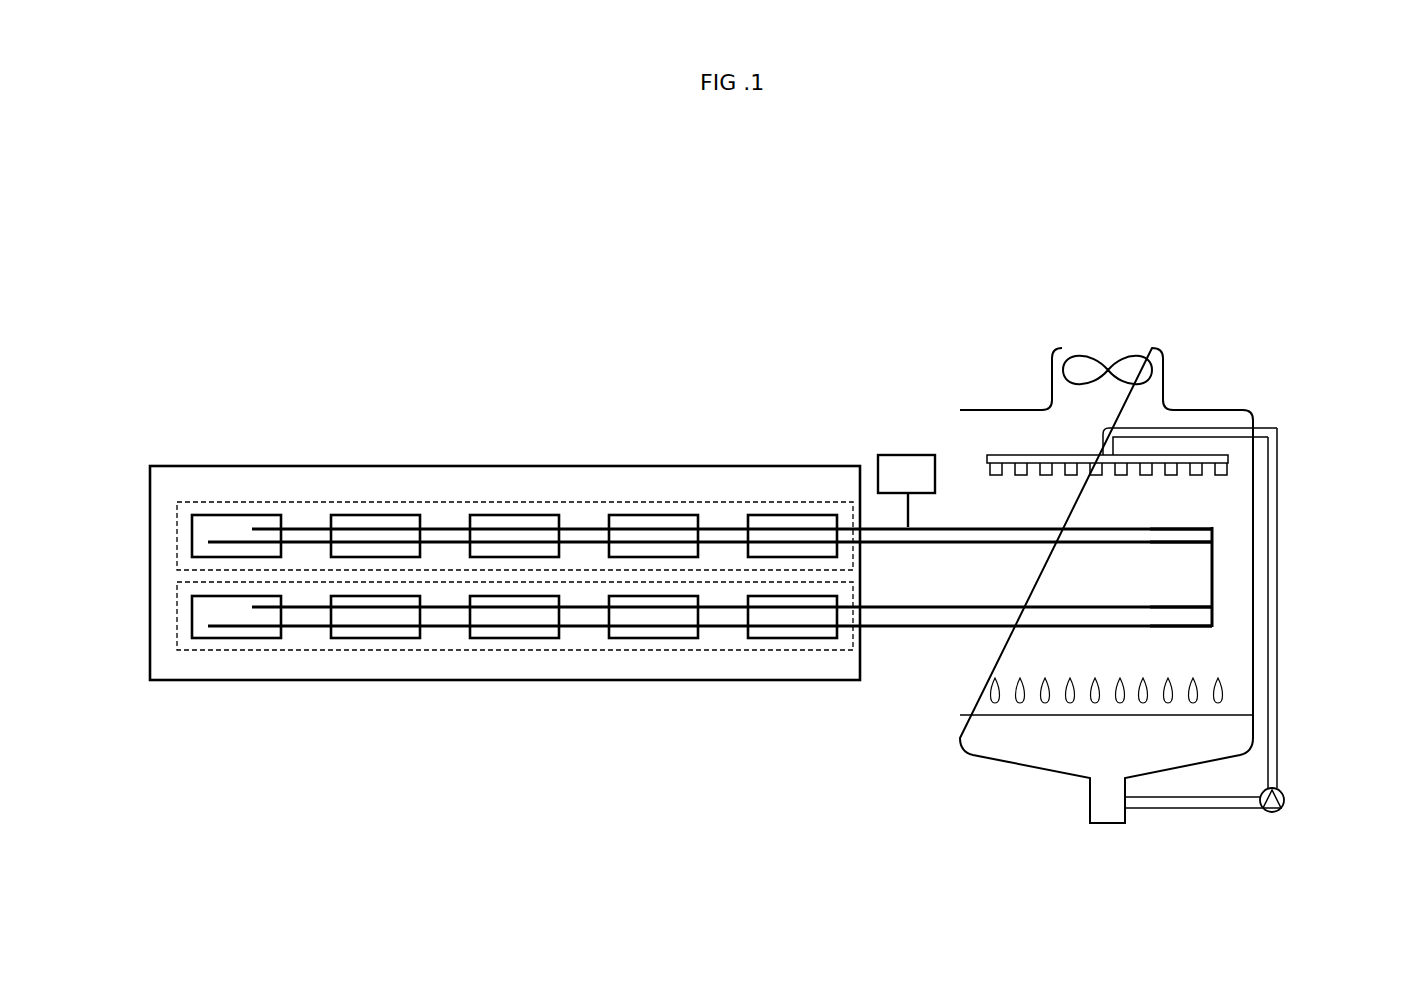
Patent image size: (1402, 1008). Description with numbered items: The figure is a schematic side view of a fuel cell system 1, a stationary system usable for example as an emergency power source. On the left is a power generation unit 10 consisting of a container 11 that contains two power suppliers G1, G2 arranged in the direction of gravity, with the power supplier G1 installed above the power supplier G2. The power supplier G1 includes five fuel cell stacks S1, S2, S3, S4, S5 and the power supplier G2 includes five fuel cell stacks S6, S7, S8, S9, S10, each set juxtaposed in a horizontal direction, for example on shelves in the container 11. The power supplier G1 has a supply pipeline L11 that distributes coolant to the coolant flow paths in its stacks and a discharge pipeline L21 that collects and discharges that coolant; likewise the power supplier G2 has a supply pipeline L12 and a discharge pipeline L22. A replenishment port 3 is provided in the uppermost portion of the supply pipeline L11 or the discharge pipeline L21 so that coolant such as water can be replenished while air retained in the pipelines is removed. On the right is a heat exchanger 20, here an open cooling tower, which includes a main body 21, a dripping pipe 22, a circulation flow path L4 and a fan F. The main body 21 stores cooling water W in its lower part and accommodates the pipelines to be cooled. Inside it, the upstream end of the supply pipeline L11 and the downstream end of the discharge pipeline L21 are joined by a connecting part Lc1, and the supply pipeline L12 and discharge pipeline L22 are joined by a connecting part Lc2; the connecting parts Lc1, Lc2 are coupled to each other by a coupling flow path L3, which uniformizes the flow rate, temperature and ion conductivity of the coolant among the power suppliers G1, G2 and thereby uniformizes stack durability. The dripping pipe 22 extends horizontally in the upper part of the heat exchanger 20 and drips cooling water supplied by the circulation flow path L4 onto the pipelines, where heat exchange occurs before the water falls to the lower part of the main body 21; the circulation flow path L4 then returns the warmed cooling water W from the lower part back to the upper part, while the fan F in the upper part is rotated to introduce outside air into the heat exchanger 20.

The fuel cell system 1 is at (878, 292).
The power generation unit 10 is at (574, 354).
The container 11 is at (787, 682).
The replenishment port 3 is at (898, 455).
The power supplier G1 is at (176, 537).
The power supplier G2 is at (176, 617).
The fuel cell stack S1 is at (237, 515).
The fuel cell stack S2 is at (376, 515).
The fuel cell stack S3 is at (515, 515).
The fuel cell stack S4 is at (654, 515).
The fuel cell stack S5 is at (793, 515).
The fuel cell stack S6 is at (237, 640).
The fuel cell stack S7 is at (376, 640).
The fuel cell stack S8 is at (515, 640).
The fuel cell stack S9 is at (654, 640).
The fuel cell stack S10 is at (793, 640).
The supply pipeline L11 is at (970, 527).
The discharge pipeline L21 is at (945, 527).
The supply pipeline L12 is at (893, 628).
The discharge pipeline L22 is at (948, 610).
The coupling flow path L3 is at (1212, 582).
The connecting part Lc1 is at (1212, 537).
The connecting part Lc2 is at (1212, 615).
The circulation flow path L4 is at (1277, 730).
The heat exchanger 20 is at (1288, 327).
The main body 21 is at (1020, 757).
The dripping pipe 22 is at (1218, 455).
The fan F is at (1083, 357).
The cooling water W is at (1075, 768).